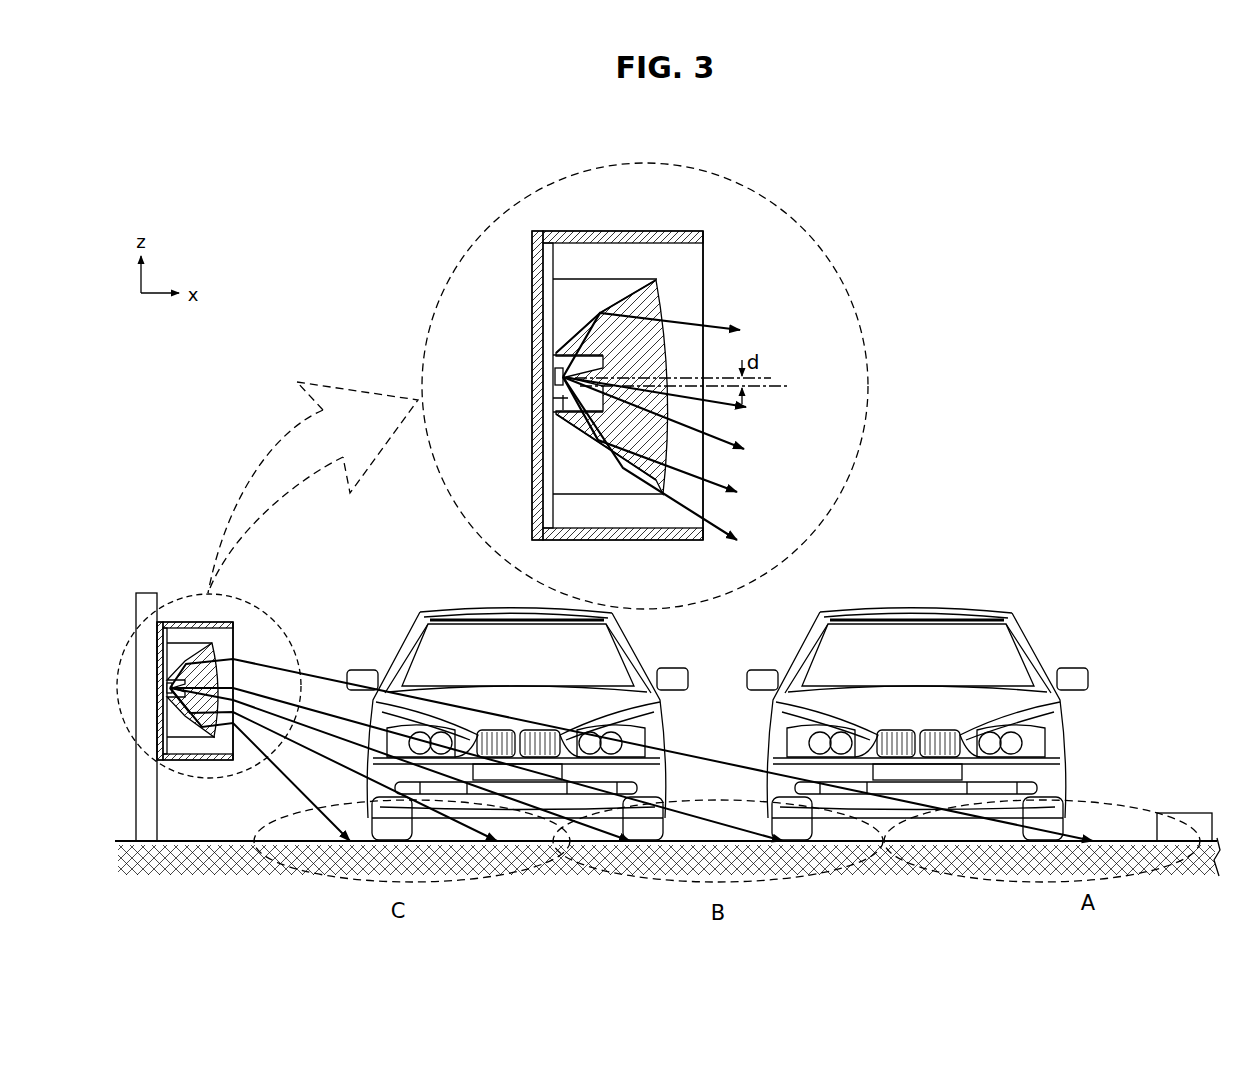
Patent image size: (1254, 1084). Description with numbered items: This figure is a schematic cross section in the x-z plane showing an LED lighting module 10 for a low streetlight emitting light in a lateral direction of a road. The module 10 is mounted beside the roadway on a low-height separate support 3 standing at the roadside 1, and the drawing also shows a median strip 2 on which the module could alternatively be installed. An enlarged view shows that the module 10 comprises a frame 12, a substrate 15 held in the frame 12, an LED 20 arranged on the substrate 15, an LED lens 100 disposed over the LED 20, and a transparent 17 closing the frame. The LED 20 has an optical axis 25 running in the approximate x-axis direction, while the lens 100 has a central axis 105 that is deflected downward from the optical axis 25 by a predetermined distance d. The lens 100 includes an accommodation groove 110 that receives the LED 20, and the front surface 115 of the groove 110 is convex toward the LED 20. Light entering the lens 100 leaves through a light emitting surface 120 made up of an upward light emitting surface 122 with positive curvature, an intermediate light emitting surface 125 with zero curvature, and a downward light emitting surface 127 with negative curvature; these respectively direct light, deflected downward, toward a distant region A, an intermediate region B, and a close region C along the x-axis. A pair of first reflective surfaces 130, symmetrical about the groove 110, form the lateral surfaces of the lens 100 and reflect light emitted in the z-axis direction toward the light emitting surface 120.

The roadside 1 is at (150, 848).
The median strip 2 is at (1185, 812).
The separate support 3 is at (147, 792).
The LED lighting module 10 is at (605, 526).
The frame 12 is at (190, 622).
The substrate 15 is at (556, 258).
The transparent 17 is at (233, 650).
The LED 20 is at (557, 373).
The optical axis 25 is at (788, 379).
The LED lens 100 is at (663, 277).
The central axis 105 is at (779, 387).
The accommodation groove 110 is at (563, 406).
The front surface 115 is at (605, 360).
The light emitting surface 120 is at (715, 402).
The upward light emitting surface 122 is at (678, 304).
The intermediate light emitting surface 125 is at (678, 374).
The downward light emitting surface 127 is at (685, 458).
The first reflective surface 130 is at (612, 300).